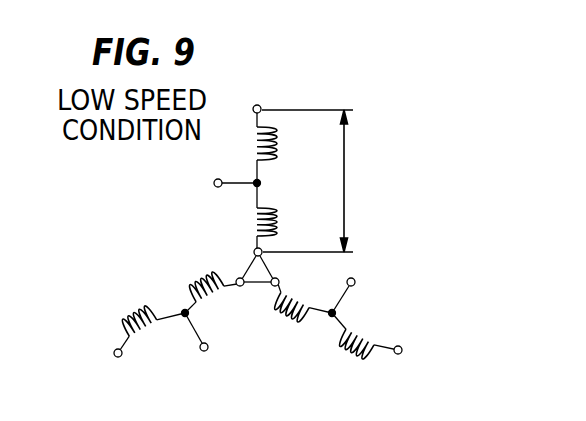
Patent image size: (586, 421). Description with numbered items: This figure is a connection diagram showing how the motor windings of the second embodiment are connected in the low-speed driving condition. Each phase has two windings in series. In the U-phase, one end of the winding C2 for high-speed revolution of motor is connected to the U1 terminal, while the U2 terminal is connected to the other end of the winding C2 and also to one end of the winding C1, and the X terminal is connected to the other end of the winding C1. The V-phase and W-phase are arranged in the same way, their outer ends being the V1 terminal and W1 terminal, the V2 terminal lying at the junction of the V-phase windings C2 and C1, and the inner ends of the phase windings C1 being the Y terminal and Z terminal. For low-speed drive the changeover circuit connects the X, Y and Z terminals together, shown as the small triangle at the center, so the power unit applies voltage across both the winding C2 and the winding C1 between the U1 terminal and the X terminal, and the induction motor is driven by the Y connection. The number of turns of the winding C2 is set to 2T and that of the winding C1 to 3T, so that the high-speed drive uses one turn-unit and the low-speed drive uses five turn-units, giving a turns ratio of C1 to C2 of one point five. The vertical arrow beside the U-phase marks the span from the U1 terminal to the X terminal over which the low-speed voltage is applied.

The U1 terminal U1 is at (253, 100).
The U2 terminal U2 is at (219, 186).
The V1 terminal V1 is at (106, 369).
The V2 terminal V2 is at (205, 350).
The W1 terminal W1 is at (381, 333).
The X terminal X is at (262, 258).
The Y terminal Y is at (253, 297).
The Z terminal Z is at (269, 297).
The winding C1 is at (234, 271).
The winding C2 for high-speed revolution of motor C2 is at (234, 251).
The number of turns of winding C2 2T is at (258, 247).
The number of turns of winding C1 3T is at (258, 260).